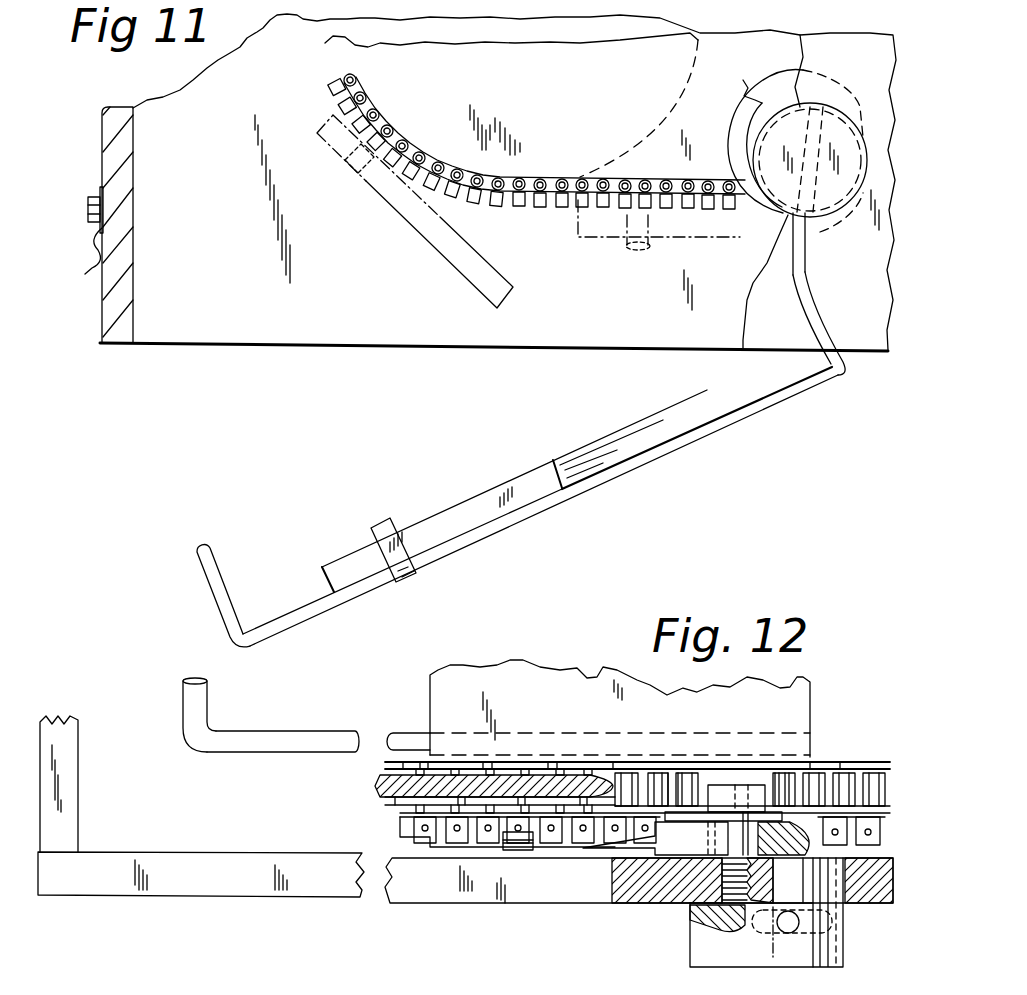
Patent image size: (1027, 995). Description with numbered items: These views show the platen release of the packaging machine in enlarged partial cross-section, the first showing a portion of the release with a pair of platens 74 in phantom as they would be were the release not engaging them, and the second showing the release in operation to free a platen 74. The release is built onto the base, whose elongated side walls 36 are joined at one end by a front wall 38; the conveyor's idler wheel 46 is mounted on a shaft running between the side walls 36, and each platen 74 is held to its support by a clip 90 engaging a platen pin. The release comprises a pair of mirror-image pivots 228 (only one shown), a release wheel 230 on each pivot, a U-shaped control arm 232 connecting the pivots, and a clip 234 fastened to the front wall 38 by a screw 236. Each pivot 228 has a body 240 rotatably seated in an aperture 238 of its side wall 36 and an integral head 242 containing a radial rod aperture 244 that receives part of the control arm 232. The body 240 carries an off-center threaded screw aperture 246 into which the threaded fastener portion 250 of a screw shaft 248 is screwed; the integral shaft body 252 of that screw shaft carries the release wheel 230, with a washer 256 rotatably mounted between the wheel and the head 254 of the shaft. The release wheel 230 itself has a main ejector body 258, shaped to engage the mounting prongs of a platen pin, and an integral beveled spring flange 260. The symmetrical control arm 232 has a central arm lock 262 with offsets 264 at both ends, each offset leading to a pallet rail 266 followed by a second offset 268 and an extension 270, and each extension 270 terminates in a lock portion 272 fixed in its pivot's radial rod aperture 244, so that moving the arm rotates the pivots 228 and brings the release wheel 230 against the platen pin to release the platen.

In FIG. 12, the side wall 36 is at (210, 852).
In FIG. 11, the front wall 38 is at (133, 270).
In FIG. 12, the front wall 38 is at (78, 784).
In FIG. 11, the idler wheel 46 is at (348, 72).
In FIG. 12, the idler wheel 46 is at (386, 795).
In FIG. 11, the platen 74 is at (485, 490).
In FIG. 12, the platen 74 is at (426, 698).
In FIG. 11, the clip 90 is at (391, 526).
In FIG. 11, the pivot 228 is at (851, 106).
In FIG. 12, the pivot 228 is at (688, 947).
In FIG. 11, the release wheel 230 is at (738, 119).
In FIG. 12, the release wheel 230 is at (665, 838).
In FIG. 11, the control arm 232 is at (360, 600).
In FIG. 11, the clip 234 is at (85, 262).
In FIG. 11, the screw 236 is at (88, 207).
In FIG. 12, the aperture 238 is at (848, 878).
In FIG. 12, the body 240 is at (808, 890).
In FIG. 12, the head 242 is at (762, 955).
In FIG. 12, the radial rod aperture 244 is at (798, 933).
In FIG. 12, the threaded screw aperture 246 is at (700, 927).
In FIG. 12, the screw shaft 248 is at (735, 783).
In FIG. 12, the threaded fastener portion 250 is at (700, 912).
In FIG. 12, the shaft body 252 is at (810, 817).
In FIG. 12, the head 254 is at (748, 783).
In FIG. 12, the washer 256 is at (677, 812).
In FIG. 12, the main ejector body 258 is at (675, 815).
In FIG. 12, the beveled spring flange 260 is at (624, 876).
In FIG. 12, the arm lock 262 is at (208, 693).
In FIG. 11, the offset 264 is at (221, 568).
In FIG. 11, the pallet rail 266 is at (545, 518).
In FIG. 12, the pallet rail 266 is at (288, 752).
In FIG. 12, the second offset 268 is at (828, 768).
In FIG. 11, the extension 270 is at (829, 331).
In FIG. 11, the lock portion 272 is at (806, 256).